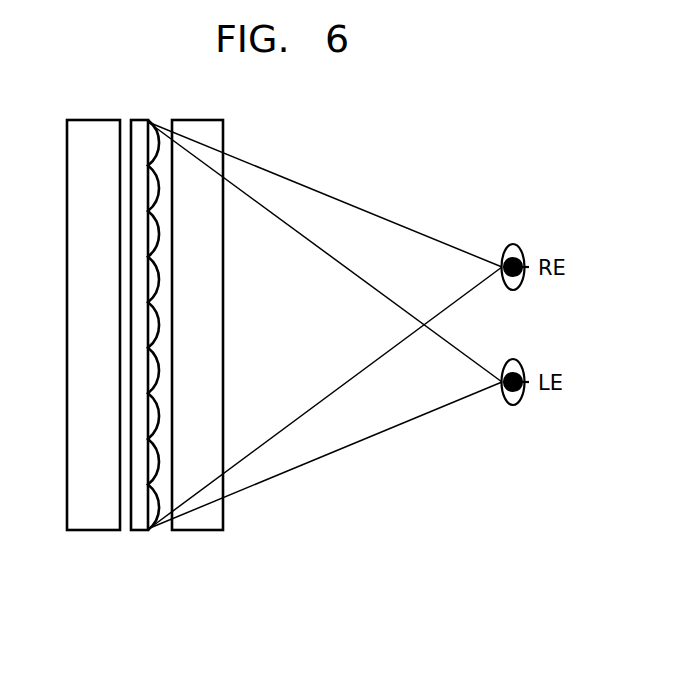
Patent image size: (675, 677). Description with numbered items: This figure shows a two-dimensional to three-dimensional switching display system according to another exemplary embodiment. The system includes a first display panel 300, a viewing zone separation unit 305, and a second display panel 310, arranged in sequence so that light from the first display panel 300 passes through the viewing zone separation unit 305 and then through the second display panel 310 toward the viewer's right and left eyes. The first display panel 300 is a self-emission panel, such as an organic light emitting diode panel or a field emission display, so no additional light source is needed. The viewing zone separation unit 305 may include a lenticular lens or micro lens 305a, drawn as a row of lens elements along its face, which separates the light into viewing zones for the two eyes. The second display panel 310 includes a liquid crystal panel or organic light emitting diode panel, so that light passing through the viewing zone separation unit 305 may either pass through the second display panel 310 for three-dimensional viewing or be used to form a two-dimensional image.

The first display panel 300 is at (93, 522).
The viewing zone separation unit 305 is at (138, 522).
The lenticular lens or micro lens 305a is at (160, 463).
The second display panel 310 is at (212, 522).